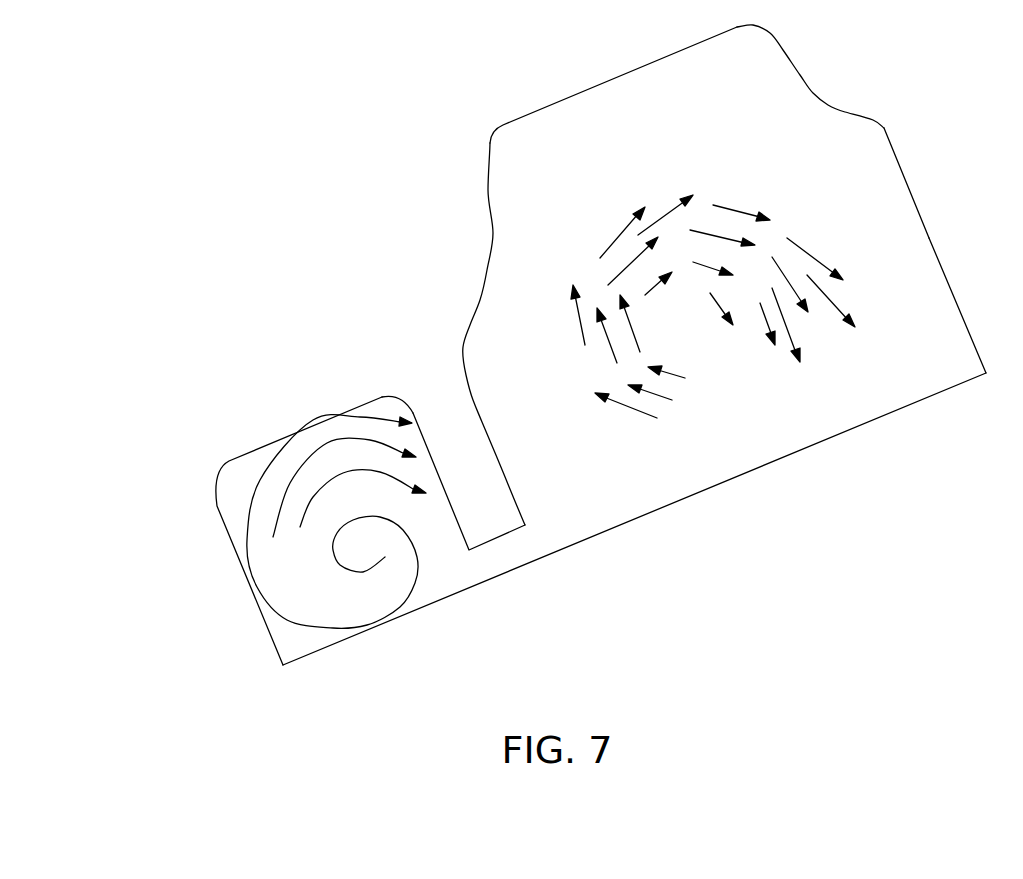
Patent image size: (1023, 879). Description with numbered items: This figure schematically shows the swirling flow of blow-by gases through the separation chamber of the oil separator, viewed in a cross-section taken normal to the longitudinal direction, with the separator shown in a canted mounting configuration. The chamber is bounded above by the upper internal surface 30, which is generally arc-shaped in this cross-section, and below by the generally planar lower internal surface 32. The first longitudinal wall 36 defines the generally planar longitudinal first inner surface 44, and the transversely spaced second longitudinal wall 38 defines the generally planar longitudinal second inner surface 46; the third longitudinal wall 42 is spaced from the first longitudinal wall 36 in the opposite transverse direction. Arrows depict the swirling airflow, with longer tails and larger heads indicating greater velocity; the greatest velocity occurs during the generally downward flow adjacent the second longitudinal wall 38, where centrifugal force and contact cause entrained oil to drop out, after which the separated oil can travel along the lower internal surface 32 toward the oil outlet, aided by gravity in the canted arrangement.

The upper internal surface 30 is at (583, 93).
The lower internal surface 32 is at (673, 502).
The first longitudinal wall 36 is at (445, 403).
The second longitudinal wall 38 is at (898, 155).
The third longitudinal wall 42 is at (243, 560).
The longitudinal first inner surface 44 is at (470, 383).
The longitudinal second inner surface 46 is at (912, 203).